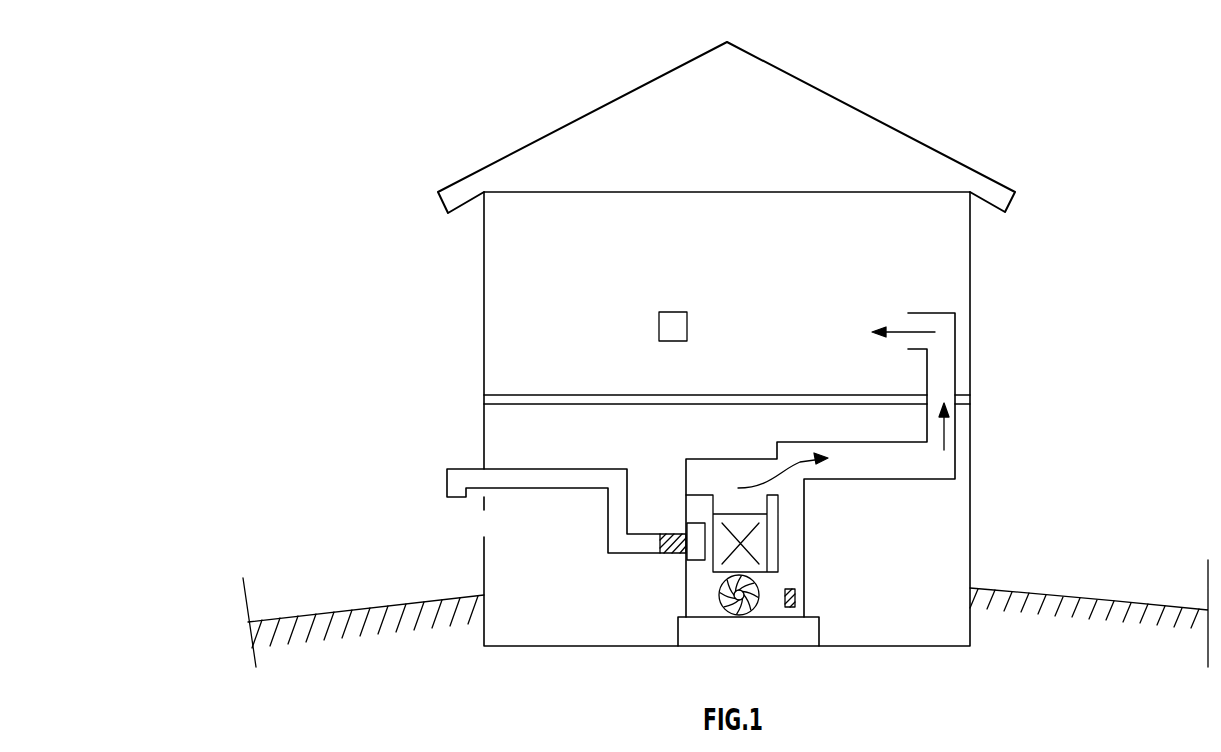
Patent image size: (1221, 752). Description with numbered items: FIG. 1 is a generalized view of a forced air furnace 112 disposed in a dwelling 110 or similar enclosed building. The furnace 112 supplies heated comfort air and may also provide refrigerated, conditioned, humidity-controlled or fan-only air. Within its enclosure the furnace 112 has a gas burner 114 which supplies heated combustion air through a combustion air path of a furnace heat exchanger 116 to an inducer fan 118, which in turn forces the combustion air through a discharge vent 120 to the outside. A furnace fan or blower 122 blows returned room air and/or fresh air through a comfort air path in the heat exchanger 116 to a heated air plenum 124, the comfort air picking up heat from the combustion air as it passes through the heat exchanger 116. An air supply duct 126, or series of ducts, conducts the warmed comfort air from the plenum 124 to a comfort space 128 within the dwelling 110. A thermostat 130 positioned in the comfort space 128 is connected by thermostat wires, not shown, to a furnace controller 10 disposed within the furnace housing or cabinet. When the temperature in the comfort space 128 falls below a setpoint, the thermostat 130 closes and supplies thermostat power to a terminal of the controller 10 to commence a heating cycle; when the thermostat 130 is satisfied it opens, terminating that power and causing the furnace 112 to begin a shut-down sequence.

The furnace controller 10 is at (795, 598).
The dwelling 110 is at (970, 220).
The forced air furnace 112 is at (612, 609).
The gas burner 114 is at (778, 550).
The furnace heat exchanger 116 is at (713, 543).
The inducer fan 118 is at (670, 553).
The discharge vent 120 is at (540, 475).
The furnace fan or blower 122 is at (739, 615).
The heated air plenum 124 is at (752, 444).
The air supply duct 126 is at (955, 390).
The comfort space 128 is at (746, 266).
The thermostat 130 is at (687, 328).